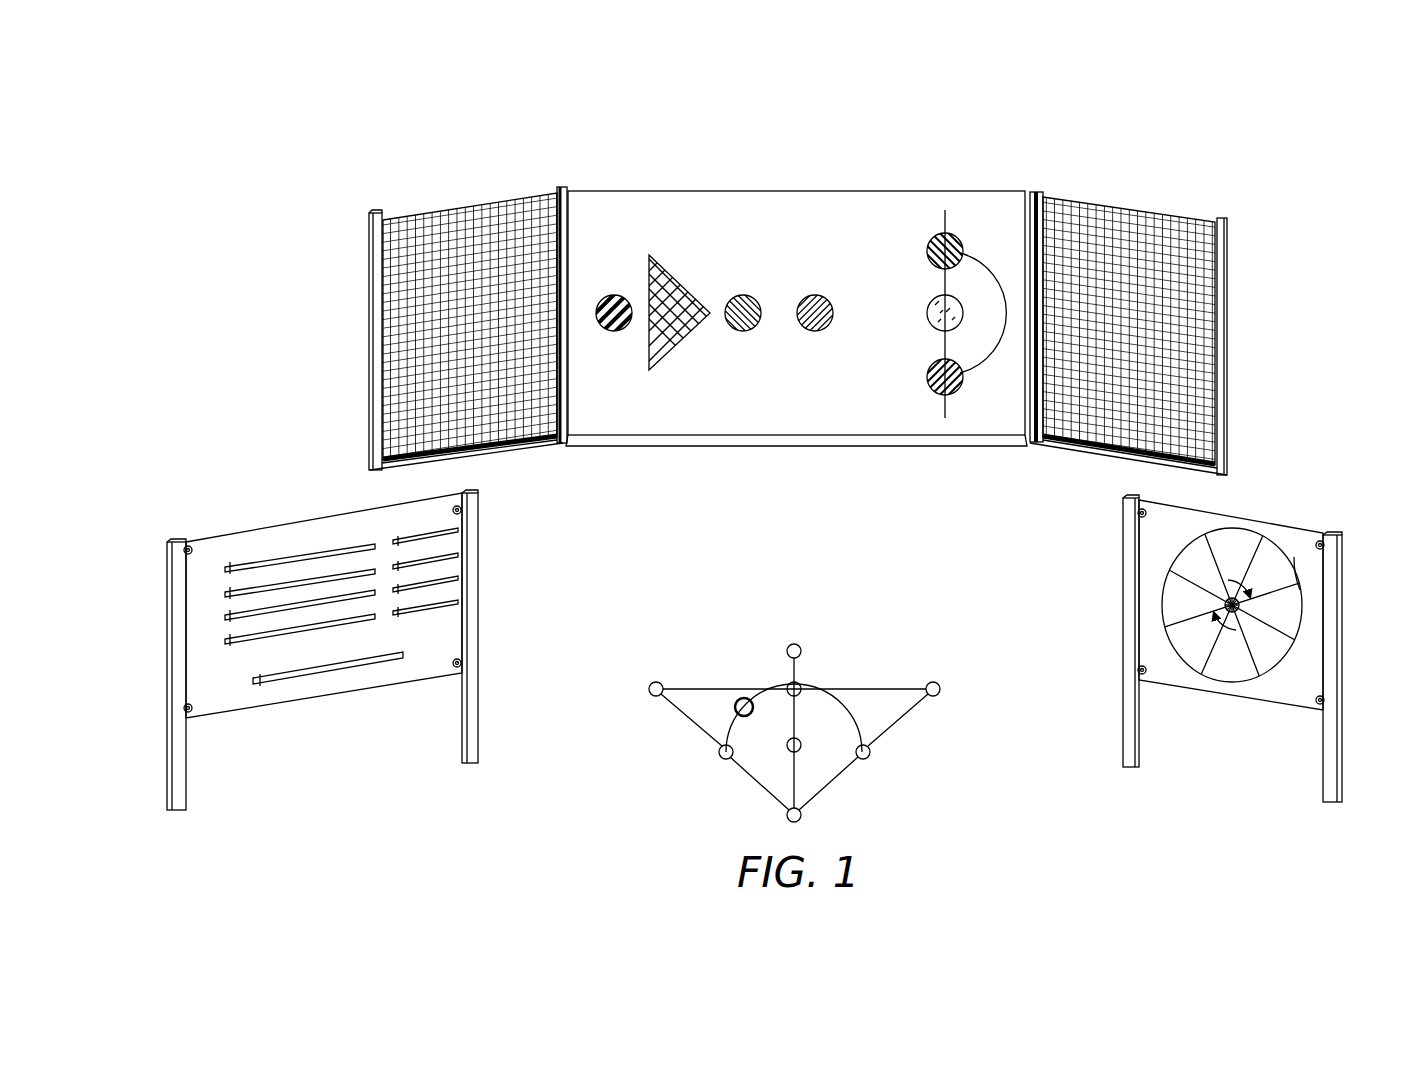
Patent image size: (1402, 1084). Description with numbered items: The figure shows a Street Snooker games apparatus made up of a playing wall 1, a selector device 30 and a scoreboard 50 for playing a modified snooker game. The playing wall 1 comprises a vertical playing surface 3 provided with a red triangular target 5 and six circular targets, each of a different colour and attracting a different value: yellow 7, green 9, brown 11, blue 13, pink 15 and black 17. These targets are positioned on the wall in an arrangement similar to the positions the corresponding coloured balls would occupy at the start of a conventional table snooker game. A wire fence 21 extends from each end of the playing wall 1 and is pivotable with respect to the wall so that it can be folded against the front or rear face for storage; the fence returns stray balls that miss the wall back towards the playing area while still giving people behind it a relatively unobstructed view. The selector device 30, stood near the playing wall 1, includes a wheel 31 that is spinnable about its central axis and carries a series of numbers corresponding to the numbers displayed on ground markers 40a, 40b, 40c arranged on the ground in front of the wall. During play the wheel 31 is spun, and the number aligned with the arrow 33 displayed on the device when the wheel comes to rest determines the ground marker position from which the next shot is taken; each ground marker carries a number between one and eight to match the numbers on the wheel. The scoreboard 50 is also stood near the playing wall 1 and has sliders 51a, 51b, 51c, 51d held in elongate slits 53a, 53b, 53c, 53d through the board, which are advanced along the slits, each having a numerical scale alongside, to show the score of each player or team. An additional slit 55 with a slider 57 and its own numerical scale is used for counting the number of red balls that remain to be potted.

The playing wall 1 is at (636, 175).
The vertical playing surface 3 is at (812, 190).
The triangular target 5 is at (685, 284).
The circular target 7 is at (927, 245).
The circular target 9 is at (927, 375).
The circular target 11 is at (927, 312).
The circular target 13 is at (823, 294).
The circular target 15 is at (750, 294).
The circular target 17 is at (612, 296).
The wire fence 21 is at (464, 205).
The selector device 30 is at (1268, 500).
The wheel 31 is at (1230, 678).
The arrow 33 is at (1296, 556).
The ground marker 40a is at (940, 696).
The ground marker 40b is at (720, 758).
The ground marker 40c is at (738, 701).
The scoreboard 50 is at (166, 504).
The slider 51a is at (228, 571).
The slider 51b is at (228, 595).
The slider 51c is at (228, 617).
The slider 51d is at (228, 641).
The elongate slit 53a is at (243, 566).
The elongate slit 53b is at (287, 577).
The elongate slit 53c is at (330, 597).
The elongate slit 53d is at (367, 616).
The additional slit 55 is at (333, 670).
The slider 57 is at (260, 683).